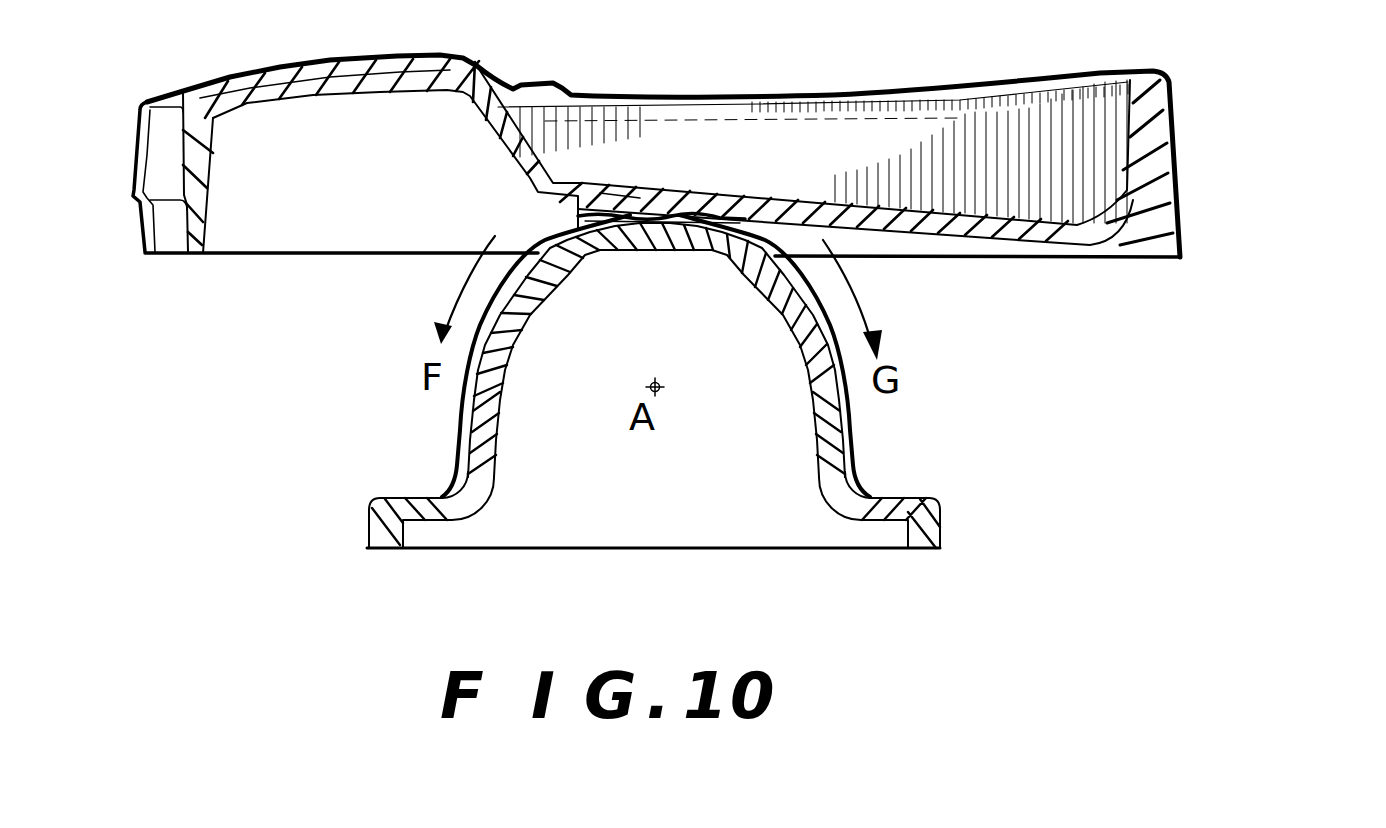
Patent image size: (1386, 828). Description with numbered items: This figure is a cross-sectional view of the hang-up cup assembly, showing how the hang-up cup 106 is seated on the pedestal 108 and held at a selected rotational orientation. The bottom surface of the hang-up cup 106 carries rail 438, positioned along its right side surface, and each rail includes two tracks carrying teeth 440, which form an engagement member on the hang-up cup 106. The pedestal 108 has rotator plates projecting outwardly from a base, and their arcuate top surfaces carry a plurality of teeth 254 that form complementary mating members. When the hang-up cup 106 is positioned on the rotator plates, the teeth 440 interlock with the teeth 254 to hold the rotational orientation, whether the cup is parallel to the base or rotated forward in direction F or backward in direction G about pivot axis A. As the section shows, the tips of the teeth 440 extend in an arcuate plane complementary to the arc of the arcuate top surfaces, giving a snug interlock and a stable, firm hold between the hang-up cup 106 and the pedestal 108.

The hang-up cup 106 is at (1200, 118).
The pedestal 108 is at (955, 485).
The teeth 254 is at (676, 212).
The rail 438 is at (641, 186).
The teeth 440 is at (688, 213).